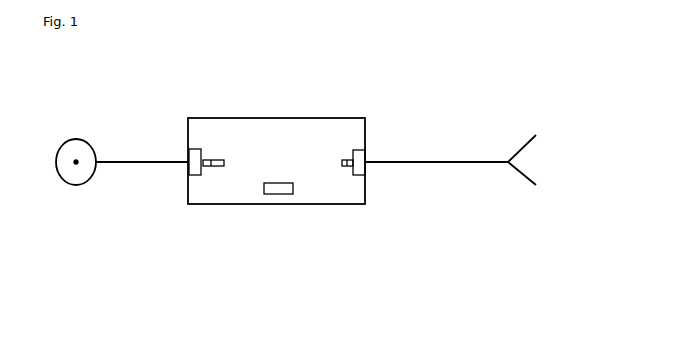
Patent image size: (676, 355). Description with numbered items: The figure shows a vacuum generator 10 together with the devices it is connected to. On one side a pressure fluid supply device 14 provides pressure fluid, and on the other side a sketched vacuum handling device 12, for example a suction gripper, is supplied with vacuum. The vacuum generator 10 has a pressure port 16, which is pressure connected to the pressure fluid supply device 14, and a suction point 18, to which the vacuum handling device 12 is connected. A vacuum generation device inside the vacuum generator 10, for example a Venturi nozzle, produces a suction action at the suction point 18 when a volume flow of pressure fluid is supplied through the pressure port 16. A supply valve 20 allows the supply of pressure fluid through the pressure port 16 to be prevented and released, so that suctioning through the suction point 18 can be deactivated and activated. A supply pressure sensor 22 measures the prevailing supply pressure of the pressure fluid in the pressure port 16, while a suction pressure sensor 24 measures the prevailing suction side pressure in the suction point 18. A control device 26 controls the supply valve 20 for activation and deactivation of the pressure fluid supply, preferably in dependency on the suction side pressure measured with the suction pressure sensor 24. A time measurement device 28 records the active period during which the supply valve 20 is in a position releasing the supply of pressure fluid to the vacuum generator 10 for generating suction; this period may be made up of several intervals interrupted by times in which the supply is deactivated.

The vacuum generator 10 is at (361, 89).
The vacuum handling device 12 is at (515, 130).
The pressure fluid supply device 14 is at (78, 133).
The pressure port 16 is at (196, 152).
The suction point 18 is at (360, 155).
The supply valve 20 is at (217, 164).
The supply pressure sensor 22 is at (205, 158).
The suction pressure sensor 24 is at (346, 160).
The control device 26 is at (303, 248).
The time measurement device 28 is at (283, 190).